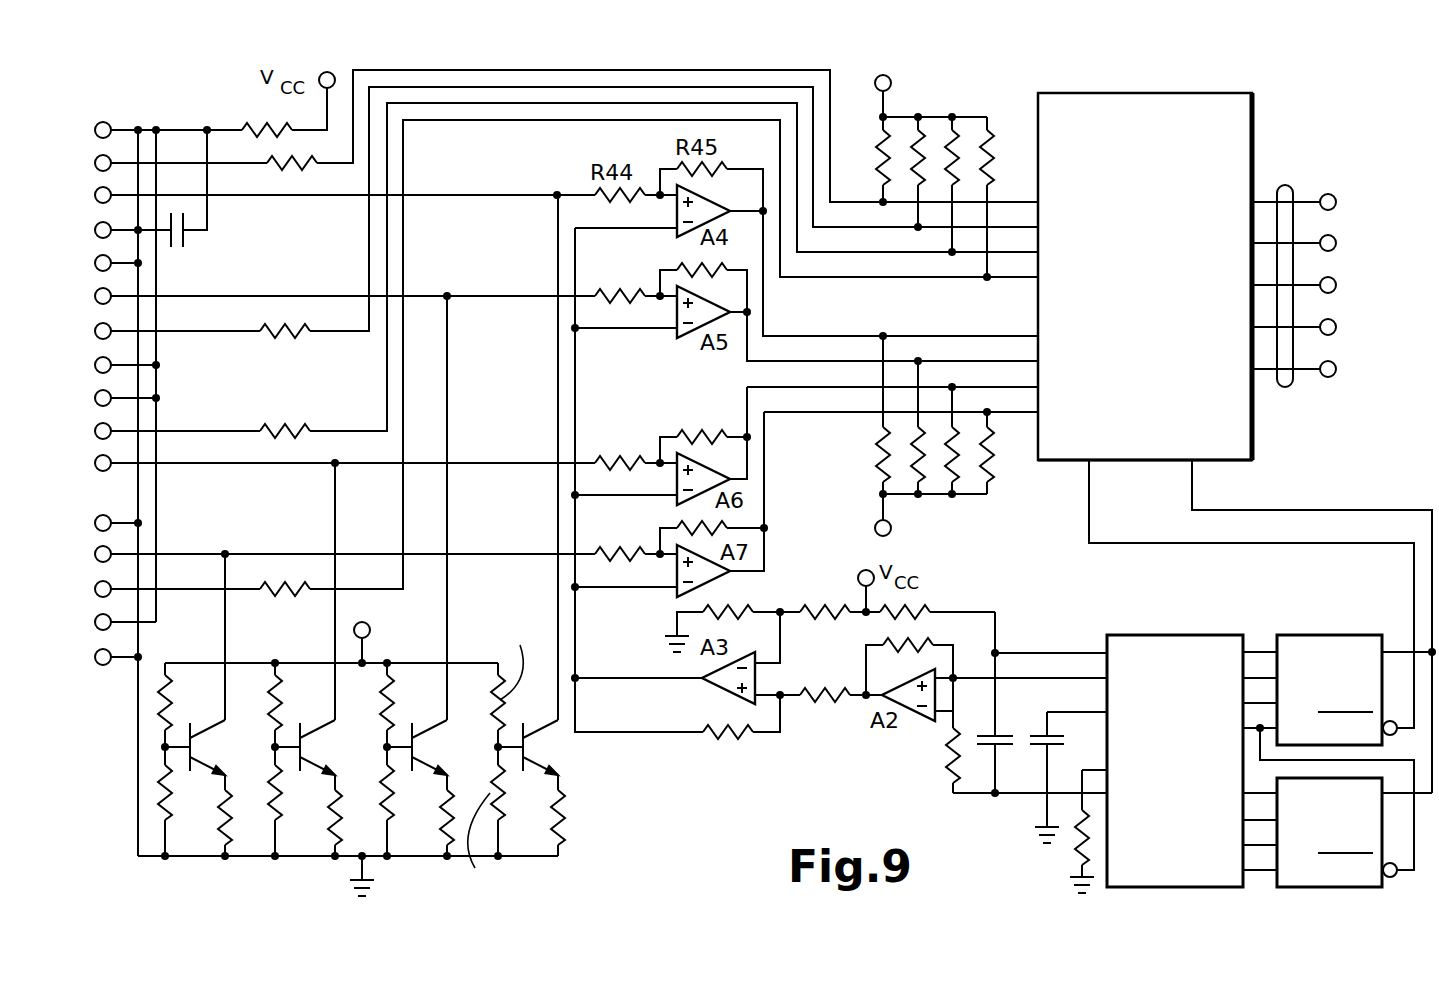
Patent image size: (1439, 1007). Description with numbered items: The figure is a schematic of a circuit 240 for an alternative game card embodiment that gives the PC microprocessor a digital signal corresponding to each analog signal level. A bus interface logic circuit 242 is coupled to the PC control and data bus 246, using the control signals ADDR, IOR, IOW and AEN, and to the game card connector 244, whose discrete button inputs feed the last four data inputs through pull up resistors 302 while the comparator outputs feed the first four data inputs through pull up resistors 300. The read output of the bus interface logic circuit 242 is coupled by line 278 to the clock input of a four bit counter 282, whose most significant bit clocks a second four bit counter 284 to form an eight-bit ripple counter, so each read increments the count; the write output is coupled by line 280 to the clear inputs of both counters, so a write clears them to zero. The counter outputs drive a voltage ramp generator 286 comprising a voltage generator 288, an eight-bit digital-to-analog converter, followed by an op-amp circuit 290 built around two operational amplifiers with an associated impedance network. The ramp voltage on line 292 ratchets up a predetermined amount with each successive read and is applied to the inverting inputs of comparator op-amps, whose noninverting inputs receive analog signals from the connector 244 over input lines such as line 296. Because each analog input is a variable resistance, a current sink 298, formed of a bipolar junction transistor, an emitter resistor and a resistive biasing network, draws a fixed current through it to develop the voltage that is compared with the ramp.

The circuit 240 is at (1274, 84).
The bus interface logic circuit 242 is at (1123, 93).
The game card connector 244 is at (119, 122).
The PC control and data bus 246 is at (1285, 184).
The line 278 is at (1205, 545).
The line 280 is at (1318, 510).
The four bit counter 282 is at (1295, 635).
The four bit counter 284 is at (1367, 839).
The voltage ramp generator 286 is at (1014, 622).
The voltage generator 288 is at (1140, 635).
The op-amp circuit 290 is at (828, 738).
The line 292 is at (577, 657).
The input line 296 is at (490, 193).
The current sink 298 is at (595, 849).
The pull up resistors 300 is at (858, 460).
The pull up resistors 302 is at (951, 102).